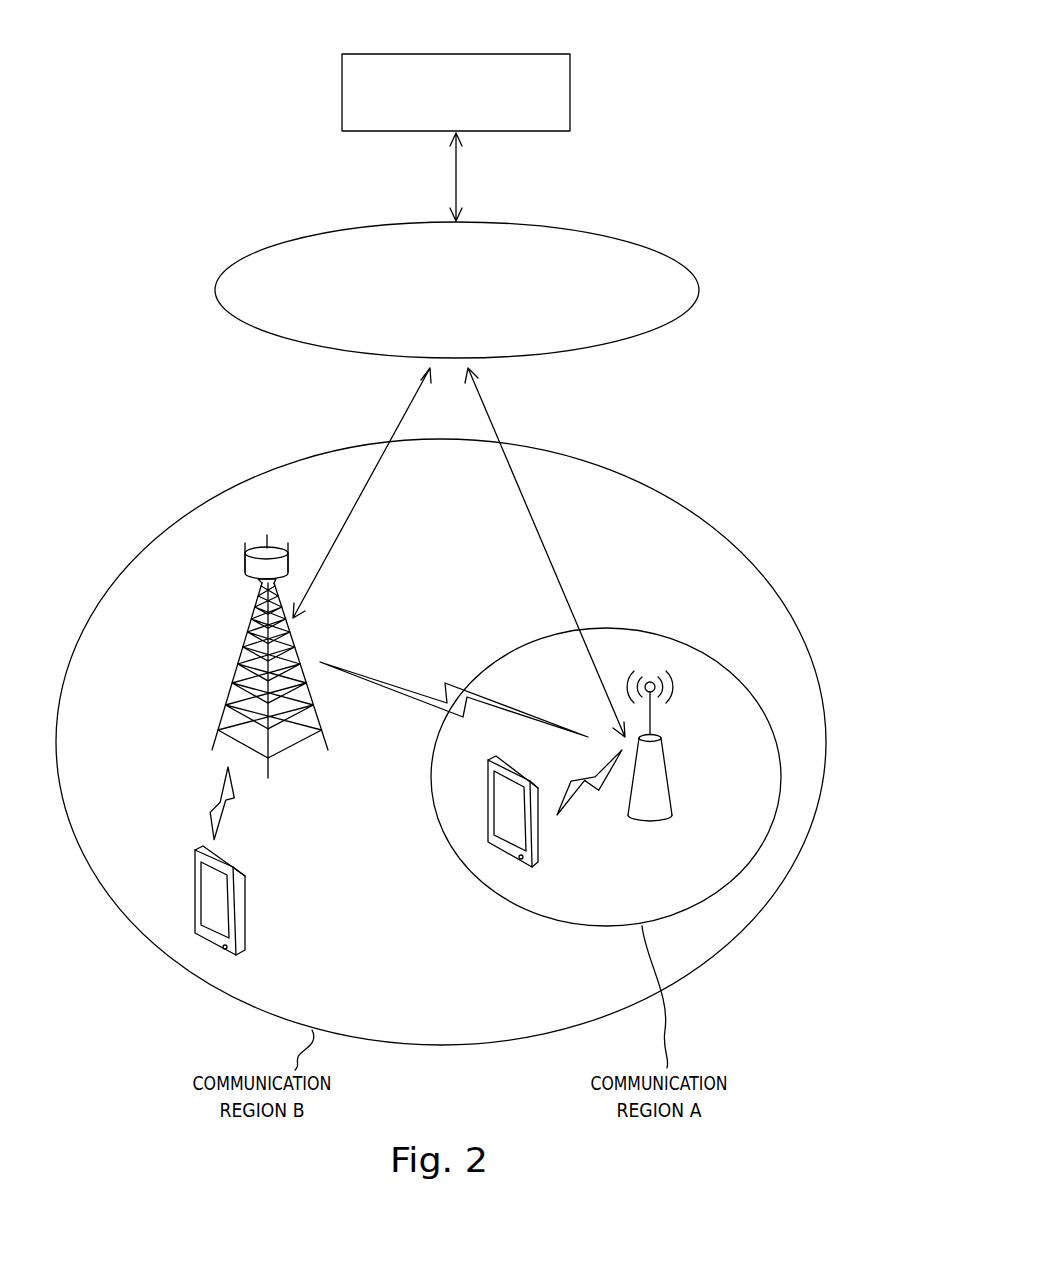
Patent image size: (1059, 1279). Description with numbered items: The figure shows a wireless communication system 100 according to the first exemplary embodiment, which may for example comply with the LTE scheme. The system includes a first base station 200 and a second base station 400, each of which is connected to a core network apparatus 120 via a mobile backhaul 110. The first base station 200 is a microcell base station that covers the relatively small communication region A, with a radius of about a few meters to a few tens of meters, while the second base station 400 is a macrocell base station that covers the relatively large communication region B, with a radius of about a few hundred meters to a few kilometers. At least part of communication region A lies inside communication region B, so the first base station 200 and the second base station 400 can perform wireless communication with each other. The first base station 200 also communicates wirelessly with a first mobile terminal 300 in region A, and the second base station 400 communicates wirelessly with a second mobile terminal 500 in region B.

The wireless communication system 100 is at (692, 100).
The mobile backhaul 110 is at (272, 240).
The core network apparatus 120 is at (458, 54).
The first base station 200 is at (672, 760).
The first mobile terminal 300 is at (490, 790).
The second base station 400 is at (248, 620).
The second mobile terminal 500 is at (196, 860).